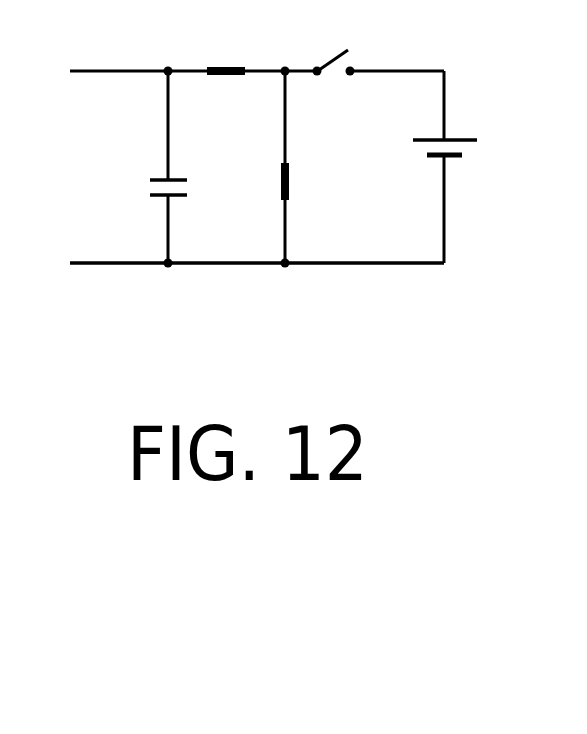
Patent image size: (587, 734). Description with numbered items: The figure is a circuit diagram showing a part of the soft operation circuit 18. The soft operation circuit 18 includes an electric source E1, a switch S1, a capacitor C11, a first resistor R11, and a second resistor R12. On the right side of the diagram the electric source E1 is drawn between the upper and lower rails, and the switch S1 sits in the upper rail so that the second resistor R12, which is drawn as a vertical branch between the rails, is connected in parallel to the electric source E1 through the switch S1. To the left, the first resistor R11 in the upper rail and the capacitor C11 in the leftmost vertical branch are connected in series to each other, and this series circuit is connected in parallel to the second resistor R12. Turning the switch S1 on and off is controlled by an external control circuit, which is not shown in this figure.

The first resistor R11 is at (224, 53).
The switch S1 is at (325, 39).
The electric source E1 is at (466, 152).
The capacitor C11 is at (136, 192).
The second resistor R12 is at (322, 184).
The soft operation circuit 18 is at (235, 277).